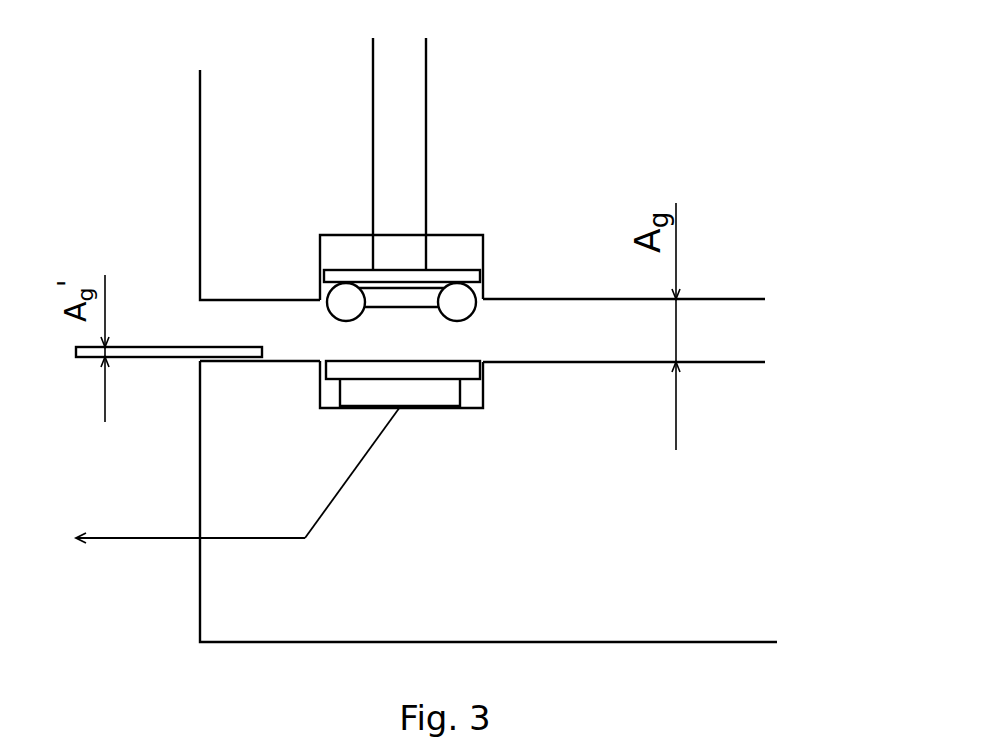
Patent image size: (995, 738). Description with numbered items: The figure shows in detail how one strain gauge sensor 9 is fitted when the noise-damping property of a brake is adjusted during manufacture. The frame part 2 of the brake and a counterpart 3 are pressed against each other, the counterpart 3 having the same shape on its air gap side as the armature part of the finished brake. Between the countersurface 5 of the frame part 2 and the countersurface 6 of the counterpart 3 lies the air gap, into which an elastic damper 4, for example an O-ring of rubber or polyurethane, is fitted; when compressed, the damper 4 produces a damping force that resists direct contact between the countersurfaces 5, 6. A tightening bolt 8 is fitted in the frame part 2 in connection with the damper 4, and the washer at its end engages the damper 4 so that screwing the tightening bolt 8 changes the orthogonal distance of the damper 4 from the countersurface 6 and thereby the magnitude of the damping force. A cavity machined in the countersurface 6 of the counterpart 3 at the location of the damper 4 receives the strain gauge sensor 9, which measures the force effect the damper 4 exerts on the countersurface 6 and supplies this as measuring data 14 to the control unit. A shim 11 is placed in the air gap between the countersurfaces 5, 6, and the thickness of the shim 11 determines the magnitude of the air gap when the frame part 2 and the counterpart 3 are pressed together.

The frame part 2 is at (571, 139).
The counterpart 3 is at (564, 587).
The damper 4 is at (483, 299).
The countersurface 5 is at (730, 299).
The countersurface 6 is at (713, 362).
The tightening bolt 8 is at (373, 128).
The strain gauge sensor 9 is at (447, 392).
The shim 11 is at (168, 347).
The measuring data 14 is at (160, 538).